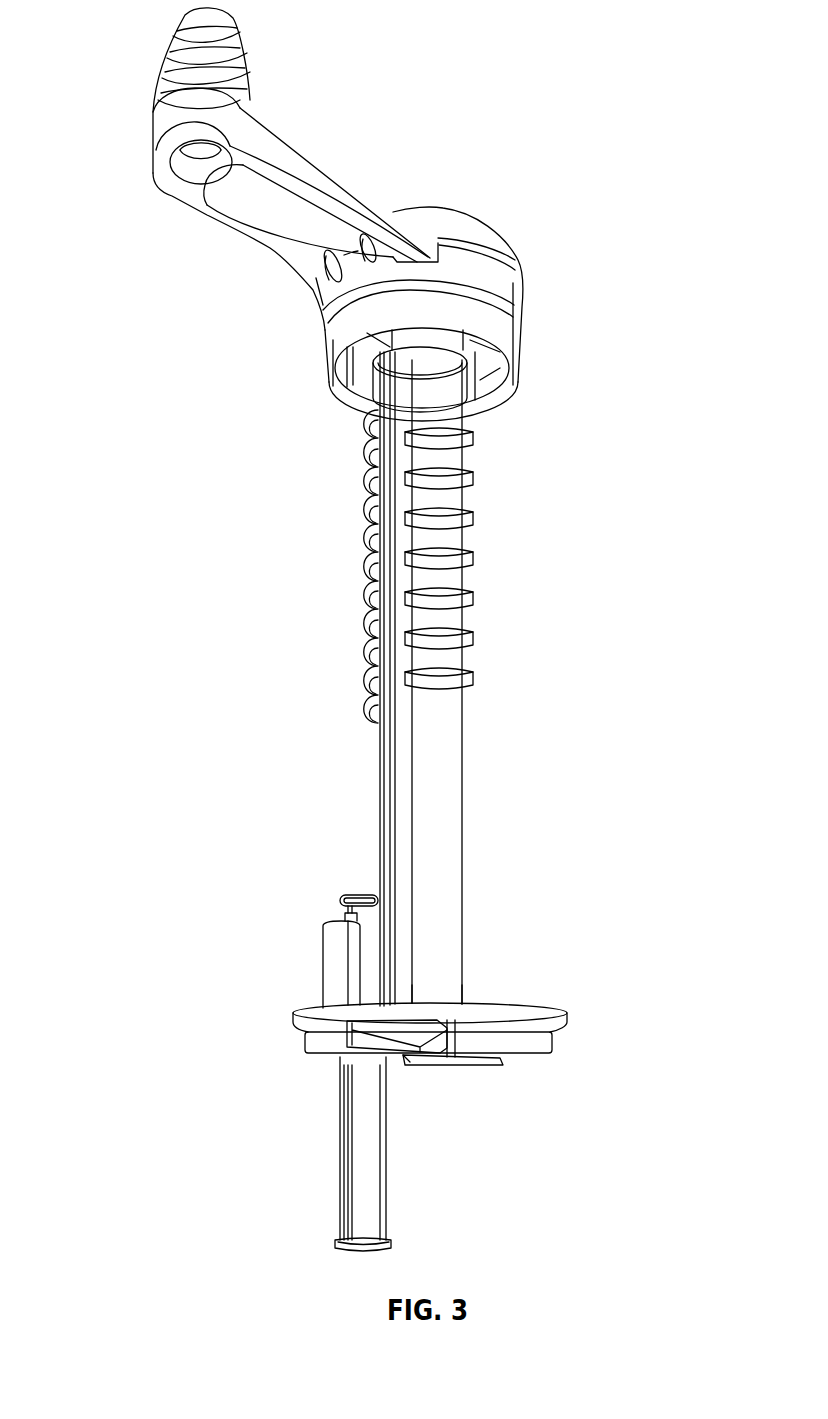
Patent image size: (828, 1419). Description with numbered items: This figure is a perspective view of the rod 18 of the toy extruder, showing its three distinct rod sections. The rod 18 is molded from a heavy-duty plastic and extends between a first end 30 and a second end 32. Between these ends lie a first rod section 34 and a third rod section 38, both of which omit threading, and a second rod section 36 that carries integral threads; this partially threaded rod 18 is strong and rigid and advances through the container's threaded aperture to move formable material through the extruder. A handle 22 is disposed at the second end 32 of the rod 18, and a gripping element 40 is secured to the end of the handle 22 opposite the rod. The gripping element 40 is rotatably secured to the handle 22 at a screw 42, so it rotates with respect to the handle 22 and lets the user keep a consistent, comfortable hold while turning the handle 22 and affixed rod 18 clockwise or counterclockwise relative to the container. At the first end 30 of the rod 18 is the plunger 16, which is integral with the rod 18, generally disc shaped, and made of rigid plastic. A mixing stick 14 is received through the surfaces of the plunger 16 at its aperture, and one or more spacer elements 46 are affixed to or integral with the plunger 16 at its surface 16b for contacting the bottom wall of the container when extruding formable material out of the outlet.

The mixing stick 14 is at (368, 1155).
The plunger 16 is at (436, 1000).
The plunger surface 16b is at (492, 1027).
The rod 18 is at (492, 682).
The handle 22 is at (373, 217).
The first end 30 is at (463, 995).
The second end 32 is at (413, 358).
The first rod section 34 is at (448, 925).
The second rod section 36 is at (463, 603).
The third rod section 38 is at (457, 417).
The gripping element 40 is at (187, 52).
The screw 42 is at (198, 148).
The spacer element 46 is at (517, 1045).